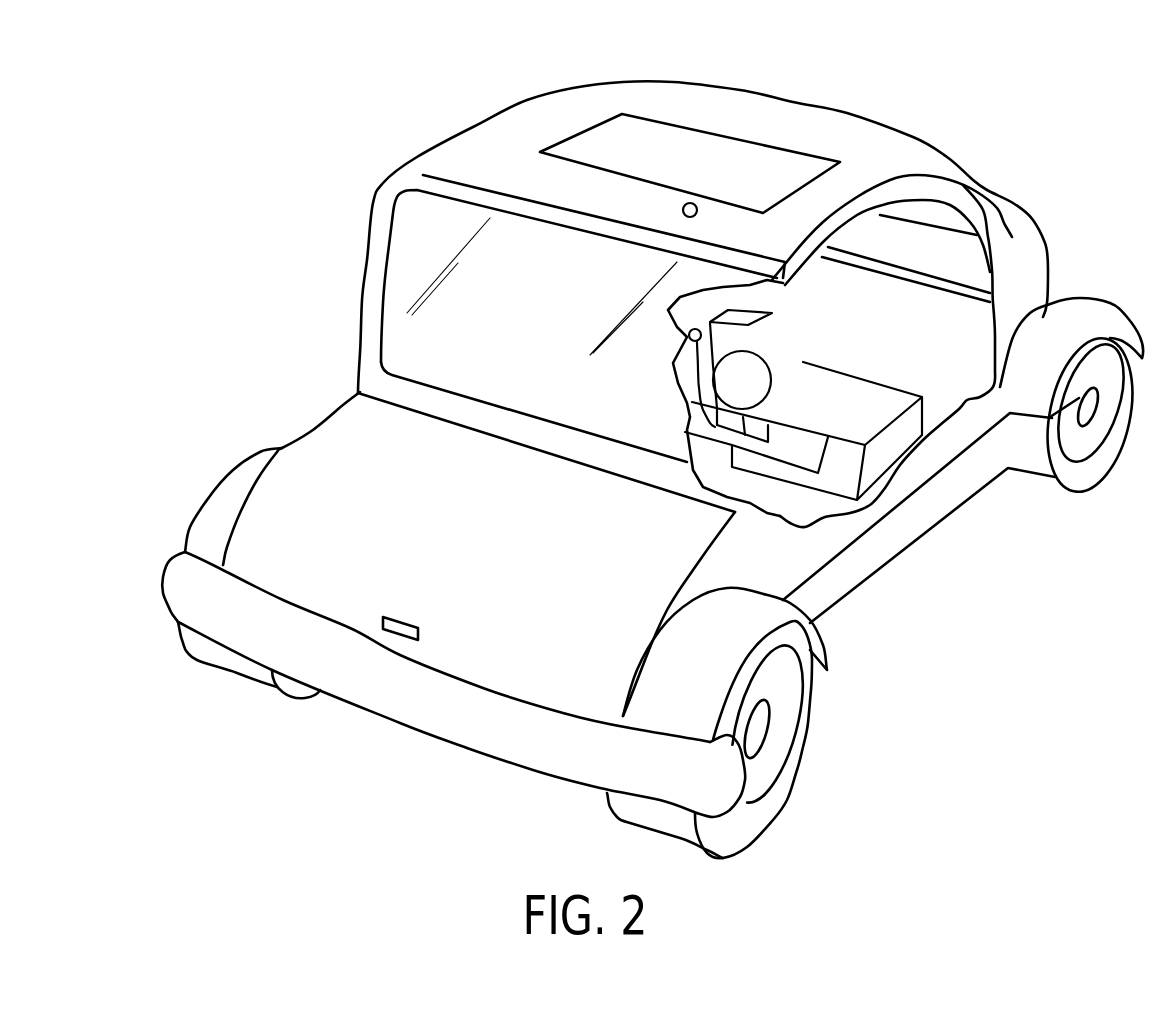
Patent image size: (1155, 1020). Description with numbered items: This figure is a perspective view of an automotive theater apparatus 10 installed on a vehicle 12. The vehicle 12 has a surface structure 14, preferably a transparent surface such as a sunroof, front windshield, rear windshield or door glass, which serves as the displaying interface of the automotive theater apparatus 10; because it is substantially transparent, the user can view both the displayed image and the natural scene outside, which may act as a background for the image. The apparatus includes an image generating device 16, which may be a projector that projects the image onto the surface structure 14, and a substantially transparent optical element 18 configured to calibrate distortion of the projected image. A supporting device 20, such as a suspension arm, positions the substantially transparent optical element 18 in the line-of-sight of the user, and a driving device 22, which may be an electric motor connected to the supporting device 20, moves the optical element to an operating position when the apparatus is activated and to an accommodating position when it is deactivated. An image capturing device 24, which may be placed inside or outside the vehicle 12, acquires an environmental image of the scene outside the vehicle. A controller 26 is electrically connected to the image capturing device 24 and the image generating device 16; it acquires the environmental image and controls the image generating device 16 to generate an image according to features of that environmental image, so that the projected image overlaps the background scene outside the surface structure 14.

The automotive theater apparatus 10 is at (773, 70).
The vehicle 12 is at (474, 141).
The surface structure 14 is at (605, 135).
The image generating device 16 is at (767, 243).
The substantially transparent optical element 18 is at (803, 192).
The supporting device 20 is at (828, 241).
The driving device 22 is at (852, 280).
The image capturing device 24 is at (697, 204).
The controller 26 is at (849, 251).